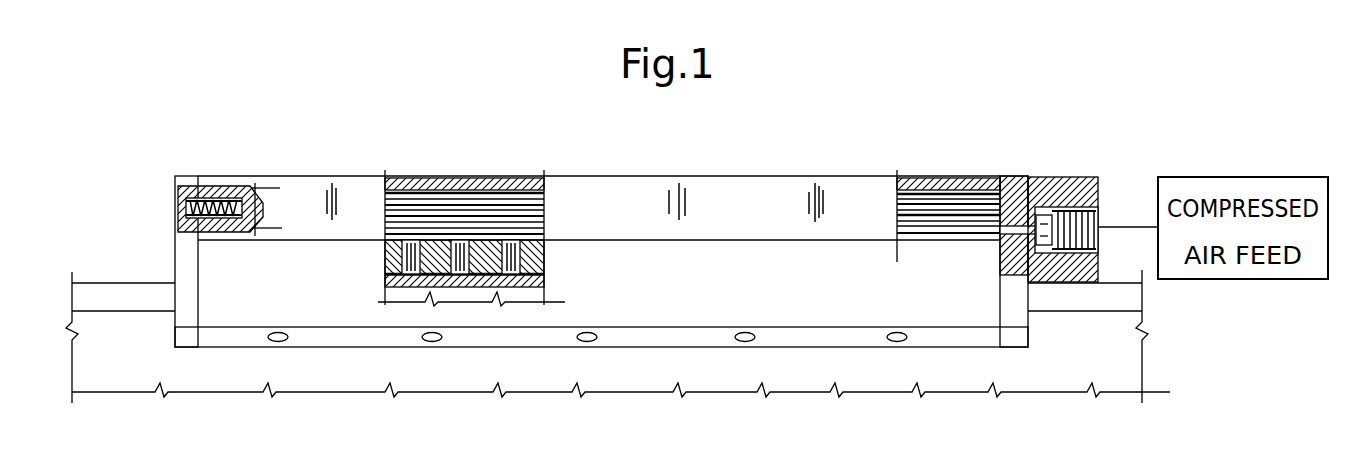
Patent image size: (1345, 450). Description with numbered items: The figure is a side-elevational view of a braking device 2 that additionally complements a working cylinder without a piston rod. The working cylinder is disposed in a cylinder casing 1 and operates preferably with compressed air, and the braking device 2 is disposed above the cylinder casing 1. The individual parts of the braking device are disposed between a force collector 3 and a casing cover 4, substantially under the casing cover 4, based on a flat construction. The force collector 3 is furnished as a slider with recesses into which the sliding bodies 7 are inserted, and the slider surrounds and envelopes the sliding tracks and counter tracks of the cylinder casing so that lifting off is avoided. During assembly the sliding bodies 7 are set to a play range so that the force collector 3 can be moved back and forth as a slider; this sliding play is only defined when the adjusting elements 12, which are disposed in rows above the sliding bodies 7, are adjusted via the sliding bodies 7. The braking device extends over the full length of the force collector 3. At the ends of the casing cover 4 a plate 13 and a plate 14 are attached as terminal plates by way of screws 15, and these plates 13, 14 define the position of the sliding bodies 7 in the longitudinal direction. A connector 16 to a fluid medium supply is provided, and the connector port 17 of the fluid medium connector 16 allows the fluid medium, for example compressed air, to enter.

The cylinder casing 1 is at (1113, 370).
The braking device 2 is at (828, 166).
The force collector 3 is at (1028, 333).
The casing cover 4 is at (955, 177).
The sliding bodies 7 is at (540, 265).
The adjusting elements 12 is at (410, 242).
The plate 13 is at (178, 243).
The plate 14 is at (1011, 338).
The screws 15 is at (181, 195).
The connector 16 is at (1079, 180).
The connector port 17 is at (1036, 178).